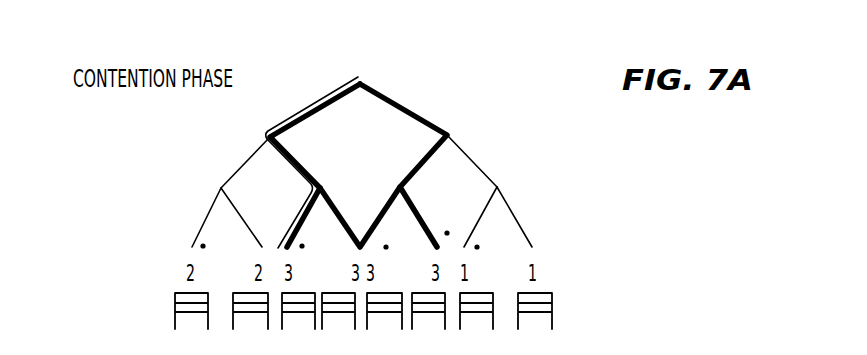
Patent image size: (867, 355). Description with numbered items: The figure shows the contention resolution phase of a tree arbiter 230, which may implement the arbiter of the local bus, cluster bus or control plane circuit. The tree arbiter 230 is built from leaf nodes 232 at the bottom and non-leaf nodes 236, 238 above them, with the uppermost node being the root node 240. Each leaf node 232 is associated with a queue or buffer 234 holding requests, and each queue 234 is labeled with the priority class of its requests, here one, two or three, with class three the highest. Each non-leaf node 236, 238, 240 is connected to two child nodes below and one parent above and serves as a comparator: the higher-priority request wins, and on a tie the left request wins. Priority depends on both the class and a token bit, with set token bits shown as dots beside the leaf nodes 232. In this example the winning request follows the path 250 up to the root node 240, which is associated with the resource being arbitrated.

The tree arbiter 230 is at (183, 165).
The leaf nodes 232 is at (534, 243).
The queue or buffer 234 is at (552, 312).
The non-leaf node 236 is at (498, 187).
The non-leaf node 238 is at (448, 135).
The root node 240 is at (363, 83).
The path 250 is at (277, 122).